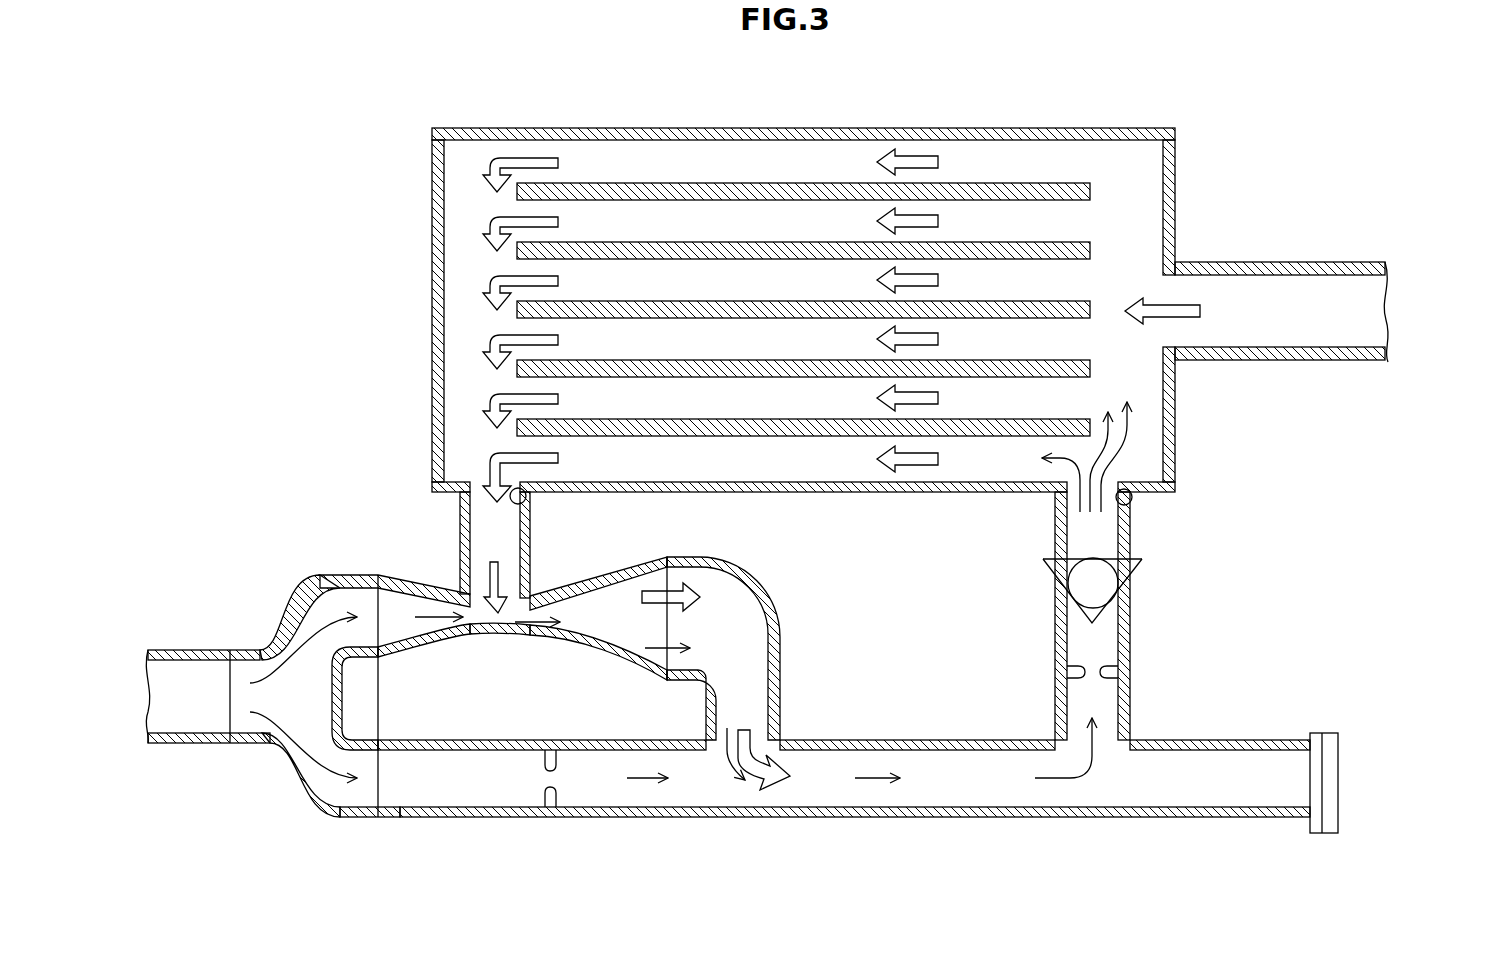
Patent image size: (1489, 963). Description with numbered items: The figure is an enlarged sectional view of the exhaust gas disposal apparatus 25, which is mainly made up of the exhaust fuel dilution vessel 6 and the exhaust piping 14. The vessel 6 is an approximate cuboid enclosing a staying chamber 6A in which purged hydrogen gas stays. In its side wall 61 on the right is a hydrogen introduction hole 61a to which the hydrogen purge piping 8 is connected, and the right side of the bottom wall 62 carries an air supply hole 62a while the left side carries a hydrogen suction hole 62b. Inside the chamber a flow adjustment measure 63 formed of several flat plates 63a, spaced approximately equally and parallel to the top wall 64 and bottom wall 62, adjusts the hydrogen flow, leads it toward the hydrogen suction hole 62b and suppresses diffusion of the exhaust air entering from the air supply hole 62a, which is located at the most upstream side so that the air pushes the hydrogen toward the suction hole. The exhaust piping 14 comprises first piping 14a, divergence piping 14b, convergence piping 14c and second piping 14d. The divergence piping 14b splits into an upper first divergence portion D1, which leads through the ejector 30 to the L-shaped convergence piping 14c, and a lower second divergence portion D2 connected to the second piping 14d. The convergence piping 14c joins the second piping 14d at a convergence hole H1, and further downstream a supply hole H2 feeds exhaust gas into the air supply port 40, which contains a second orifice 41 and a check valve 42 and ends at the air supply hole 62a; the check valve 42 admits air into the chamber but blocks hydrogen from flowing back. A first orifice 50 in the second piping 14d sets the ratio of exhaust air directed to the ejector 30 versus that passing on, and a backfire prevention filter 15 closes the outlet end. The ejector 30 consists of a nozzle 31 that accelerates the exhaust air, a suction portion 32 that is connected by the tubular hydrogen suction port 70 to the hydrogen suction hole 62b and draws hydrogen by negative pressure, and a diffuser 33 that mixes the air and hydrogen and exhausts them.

The exhaust gas disposal apparatus 25 is at (388, 145).
The exhaust fuel dilution vessel 6 is at (1143, 127).
The staying chamber 6A is at (474, 158).
The top wall 64 is at (633, 128).
The side wall 61 is at (1177, 196).
The hydrogen introduction hole 61a is at (1176, 333).
The bottom wall 62 is at (918, 493).
The air supply hole 62a is at (1132, 498).
The hydrogen suction hole 62b is at (526, 498).
The flow adjustment measure 63 is at (964, 181).
The flat plates 63a is at (784, 242).
The hydrogen purge piping 8 is at (1330, 360).
The hydrogen suction port 70 is at (530, 540).
The ejector 30 is at (403, 576).
The nozzle 31 is at (400, 657).
The suction portion 32 is at (490, 638).
The diffuser 33 is at (606, 672).
The exhaust piping 14 is at (478, 818).
The first piping 14a is at (172, 743).
The divergence piping 14b is at (290, 762).
The convergence piping 14c is at (781, 676).
The second piping 14d is at (742, 817).
The first divergence portion D1 is at (348, 575).
The second divergence portion D2 is at (355, 820).
The convergence hole H1 is at (767, 737).
The supply hole H2 is at (1116, 735).
The first orifice 50 is at (565, 800).
The backfire prevention filter 15 is at (1318, 733).
The air supply port 40 is at (1053, 640).
The second orifice 41 is at (1112, 672).
The check valve 42 is at (1100, 596).